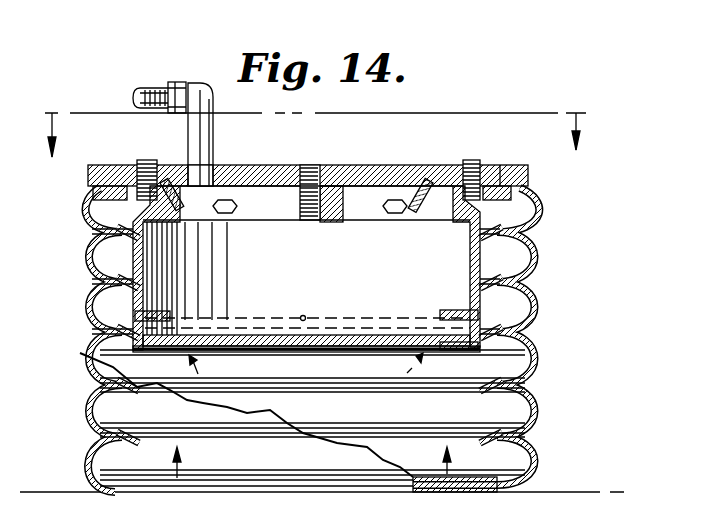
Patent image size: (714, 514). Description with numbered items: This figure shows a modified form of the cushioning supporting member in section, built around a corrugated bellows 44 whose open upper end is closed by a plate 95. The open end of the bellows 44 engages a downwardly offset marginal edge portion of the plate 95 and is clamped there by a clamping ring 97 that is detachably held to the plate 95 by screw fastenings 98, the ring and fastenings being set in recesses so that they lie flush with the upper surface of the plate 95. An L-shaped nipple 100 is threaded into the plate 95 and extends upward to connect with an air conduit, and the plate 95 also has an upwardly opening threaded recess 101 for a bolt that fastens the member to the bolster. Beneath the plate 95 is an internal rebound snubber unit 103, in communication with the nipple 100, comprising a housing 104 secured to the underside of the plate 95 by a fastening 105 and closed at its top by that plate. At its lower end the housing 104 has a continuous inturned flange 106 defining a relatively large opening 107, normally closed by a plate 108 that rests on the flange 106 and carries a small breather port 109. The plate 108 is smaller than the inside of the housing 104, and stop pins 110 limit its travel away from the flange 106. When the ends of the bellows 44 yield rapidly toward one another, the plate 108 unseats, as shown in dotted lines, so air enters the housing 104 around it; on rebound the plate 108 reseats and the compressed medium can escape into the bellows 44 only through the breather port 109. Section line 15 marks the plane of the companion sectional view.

The section line 15- 15 is at (316, 119).
The bellows 44 is at (535, 363).
The plate 95 is at (407, 166).
The clamping ring 97 is at (529, 172).
The screw fastenings 98 is at (471, 165).
The L-shaped nipple 100 is at (205, 138).
The threaded recess 101 is at (317, 166).
The snubber unit 103 is at (492, 261).
The housing 104 is at (340, 278).
The fastening 105 is at (447, 208).
The inturned flange 106 is at (456, 347).
The opening 107 is at (330, 347).
The plate 108 is at (255, 316).
The breather port 109 is at (313, 318).
The stop pins 110 is at (160, 312).